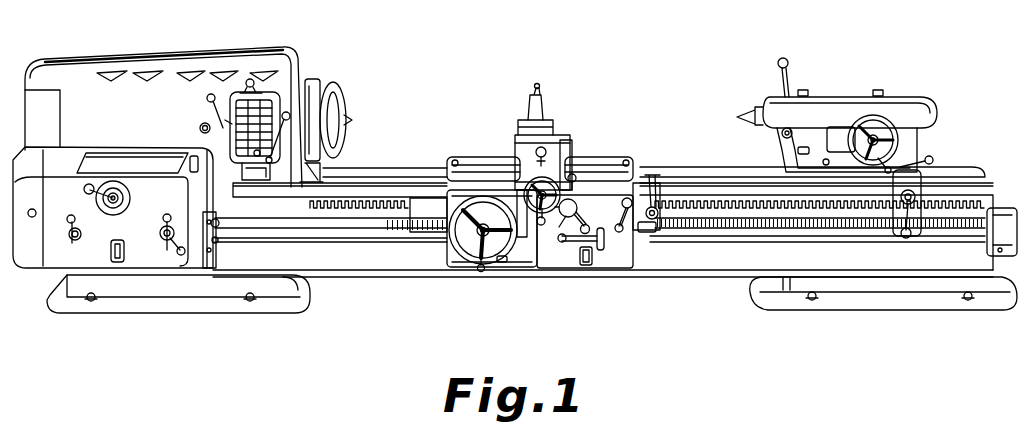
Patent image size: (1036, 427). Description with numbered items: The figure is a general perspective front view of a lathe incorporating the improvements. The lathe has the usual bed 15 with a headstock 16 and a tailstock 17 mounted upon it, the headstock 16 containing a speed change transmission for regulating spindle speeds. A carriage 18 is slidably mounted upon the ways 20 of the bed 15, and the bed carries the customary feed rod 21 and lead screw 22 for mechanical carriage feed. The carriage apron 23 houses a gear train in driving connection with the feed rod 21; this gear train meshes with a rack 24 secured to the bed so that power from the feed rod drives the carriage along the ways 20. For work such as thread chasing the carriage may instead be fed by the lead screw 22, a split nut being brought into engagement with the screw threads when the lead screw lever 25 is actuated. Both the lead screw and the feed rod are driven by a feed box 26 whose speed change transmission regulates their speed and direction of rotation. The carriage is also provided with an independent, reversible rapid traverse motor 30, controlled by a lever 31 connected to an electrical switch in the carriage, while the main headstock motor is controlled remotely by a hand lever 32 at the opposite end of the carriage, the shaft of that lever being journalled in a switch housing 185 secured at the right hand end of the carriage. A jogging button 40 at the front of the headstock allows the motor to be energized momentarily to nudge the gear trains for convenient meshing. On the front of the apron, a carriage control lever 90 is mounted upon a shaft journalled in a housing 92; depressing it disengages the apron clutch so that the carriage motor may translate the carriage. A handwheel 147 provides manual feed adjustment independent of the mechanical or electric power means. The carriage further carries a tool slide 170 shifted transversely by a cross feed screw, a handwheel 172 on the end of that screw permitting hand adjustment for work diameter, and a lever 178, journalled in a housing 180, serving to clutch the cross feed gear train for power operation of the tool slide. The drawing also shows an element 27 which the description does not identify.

The bed 15 is at (699, 268).
The headstock 16 is at (293, 47).
The tailstock 17 is at (836, 106).
The carriage 18 is at (567, 156).
The ways 20 is at (690, 168).
The feed rod 21 is at (386, 244).
The lead screw 22 is at (413, 233).
The carriage apron 23 is at (568, 265).
The rack 24 is at (382, 203).
The lead screw lever 25 is at (624, 232).
The feed box 26 is at (157, 258).
The clutch lever 27 is at (600, 244).
The rapid traverse motor 30 is at (474, 262).
The lever 31 is at (461, 172).
The hand lever 32 is at (652, 173).
The jogging button 40 is at (241, 165).
The carriage control lever 90 is at (530, 262).
The housing 92 is at (541, 226).
The handwheel 147 is at (500, 263).
The tool slide 170 is at (522, 154).
The handwheel 172 is at (573, 176).
The lever 178 is at (584, 220).
The housing 180 is at (576, 204).
The switch housing 185 is at (653, 228).